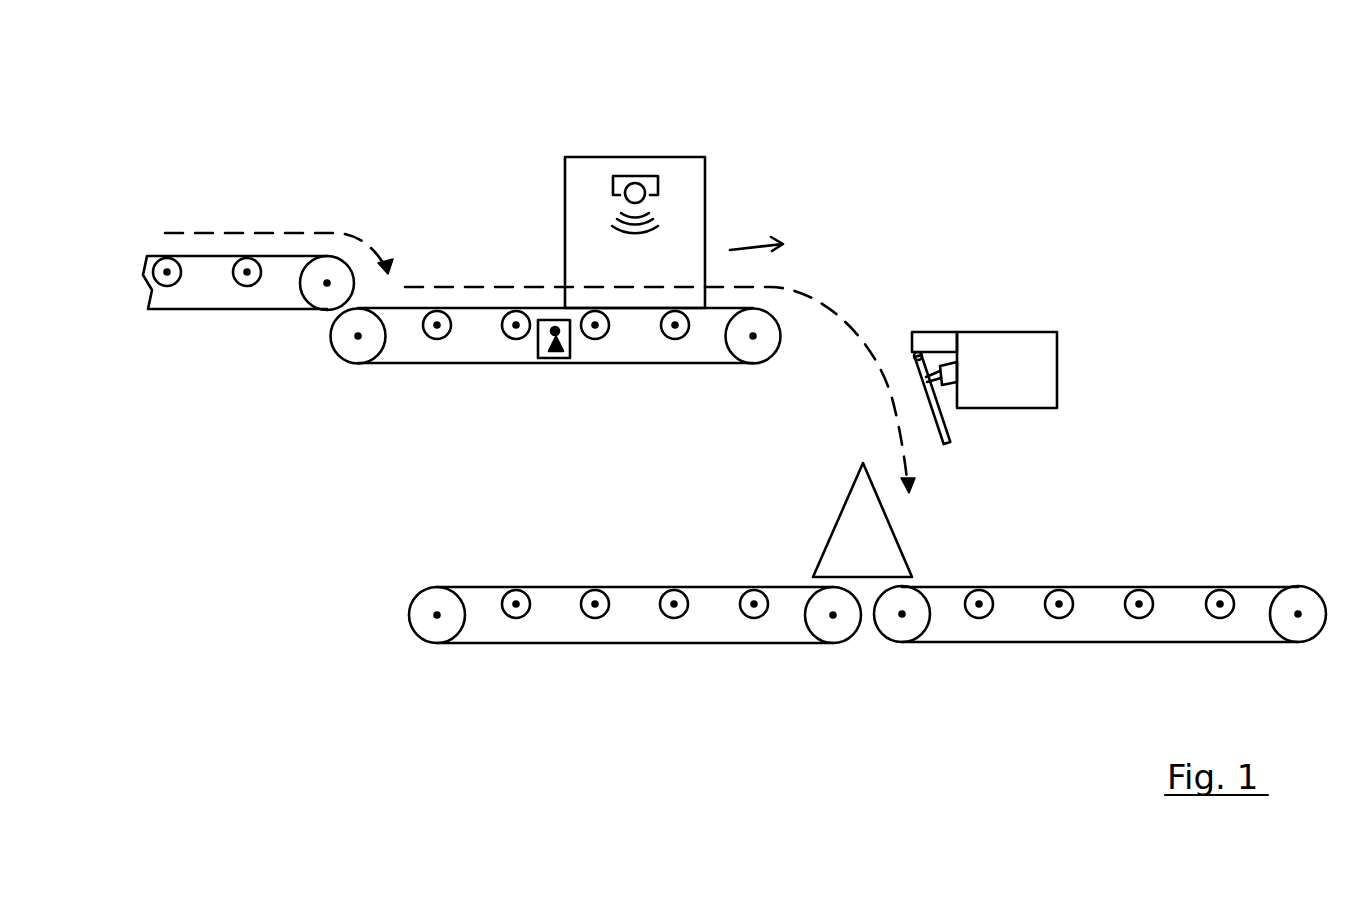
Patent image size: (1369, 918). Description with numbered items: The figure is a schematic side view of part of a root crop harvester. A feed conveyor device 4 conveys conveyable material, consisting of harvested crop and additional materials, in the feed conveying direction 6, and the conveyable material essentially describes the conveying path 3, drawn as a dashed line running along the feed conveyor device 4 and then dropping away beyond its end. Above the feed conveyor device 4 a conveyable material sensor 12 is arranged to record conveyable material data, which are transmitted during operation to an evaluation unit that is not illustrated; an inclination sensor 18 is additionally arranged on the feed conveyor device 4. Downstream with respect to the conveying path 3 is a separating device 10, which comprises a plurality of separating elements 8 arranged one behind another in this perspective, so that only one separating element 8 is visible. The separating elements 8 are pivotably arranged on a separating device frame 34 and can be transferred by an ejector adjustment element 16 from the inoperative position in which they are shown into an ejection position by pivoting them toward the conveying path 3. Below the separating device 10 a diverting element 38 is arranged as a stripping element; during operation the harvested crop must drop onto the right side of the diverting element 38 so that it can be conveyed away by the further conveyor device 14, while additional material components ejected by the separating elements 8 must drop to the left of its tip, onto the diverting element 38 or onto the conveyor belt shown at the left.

The conveying path 3 is at (473, 282).
The feed conveyor device 4 is at (399, 306).
The feed conveying direction 6 is at (756, 231).
The separating element 8 is at (920, 390).
The separating device 10 is at (974, 276).
The conveyable material sensor 12 is at (636, 184).
The further conveyor device 14 is at (1183, 587).
The ejector adjustment element 16 is at (958, 365).
The inclination sensor 18 is at (560, 345).
The separating device frame 34 is at (1007, 307).
The diverting element 38 is at (863, 550).